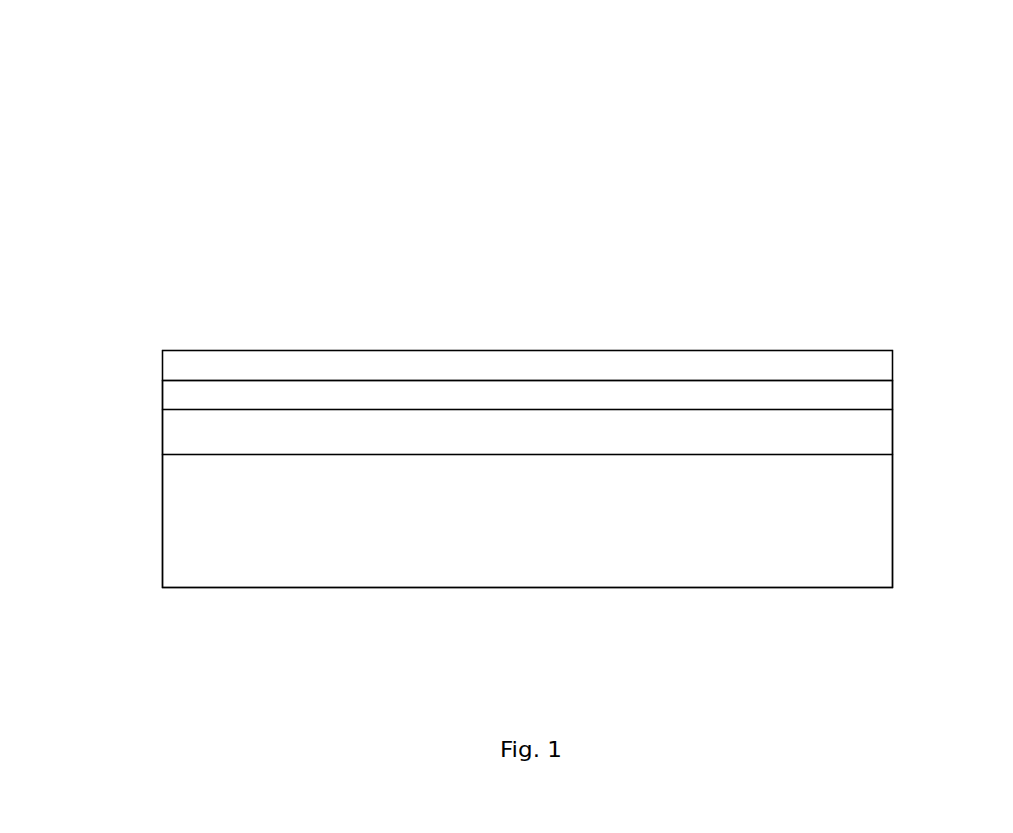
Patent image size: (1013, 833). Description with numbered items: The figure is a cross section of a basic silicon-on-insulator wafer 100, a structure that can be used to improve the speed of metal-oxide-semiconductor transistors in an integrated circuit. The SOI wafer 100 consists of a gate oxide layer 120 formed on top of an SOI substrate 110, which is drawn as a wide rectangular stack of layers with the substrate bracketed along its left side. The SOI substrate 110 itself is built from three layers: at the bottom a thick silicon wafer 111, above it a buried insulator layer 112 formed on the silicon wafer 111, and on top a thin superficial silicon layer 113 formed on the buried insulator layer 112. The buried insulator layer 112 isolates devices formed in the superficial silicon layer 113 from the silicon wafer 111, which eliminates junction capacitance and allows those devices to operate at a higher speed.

The silicon-on-insulator (SOI) wafer 100 is at (96, 92).
The SOI substrate 110 is at (105, 380).
The silicon wafer 111 is at (216, 569).
The buried insulator layer 112 is at (214, 442).
The superficial silicon layer 113 is at (160, 397).
The gate oxide layer 120 is at (237, 350).